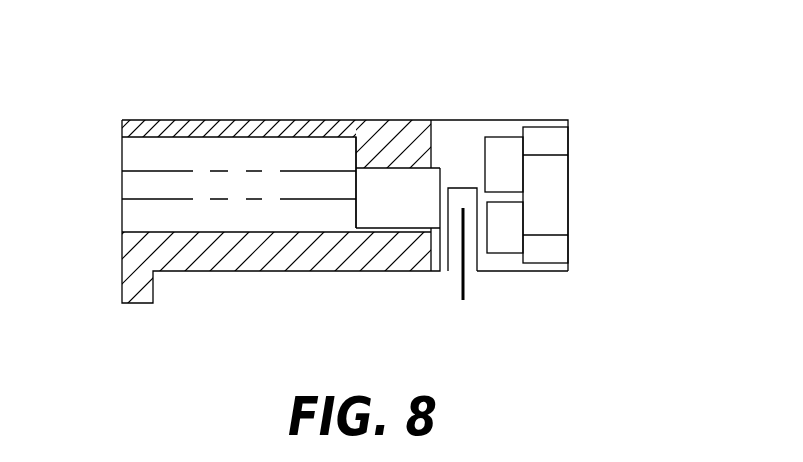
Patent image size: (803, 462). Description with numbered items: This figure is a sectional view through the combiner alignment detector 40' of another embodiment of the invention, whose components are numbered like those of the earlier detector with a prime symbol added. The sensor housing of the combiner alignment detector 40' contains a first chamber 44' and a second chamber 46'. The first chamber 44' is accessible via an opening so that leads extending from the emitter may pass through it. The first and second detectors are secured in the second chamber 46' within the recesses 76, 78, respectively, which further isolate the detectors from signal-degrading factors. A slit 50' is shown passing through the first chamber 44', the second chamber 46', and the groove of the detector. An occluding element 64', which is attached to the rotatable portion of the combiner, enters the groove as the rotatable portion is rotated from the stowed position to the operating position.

The combiner alignment detector 40' is at (353, 231).
The first chamber 44' is at (369, 143).
The slit 50' is at (481, 171).
The second chamber 46' is at (590, 195).
The recess 78 is at (503, 163).
The recess 76 is at (505, 243).
The occluding element 64' is at (531, 283).